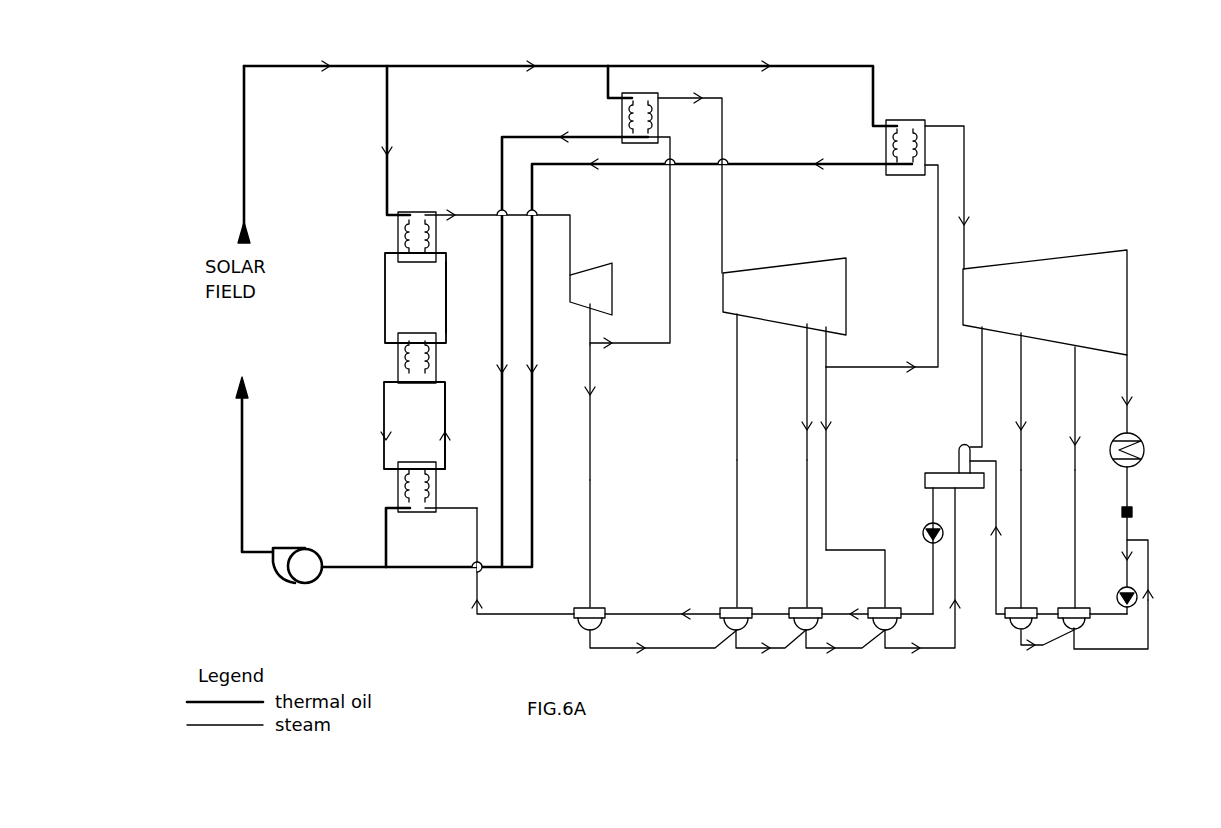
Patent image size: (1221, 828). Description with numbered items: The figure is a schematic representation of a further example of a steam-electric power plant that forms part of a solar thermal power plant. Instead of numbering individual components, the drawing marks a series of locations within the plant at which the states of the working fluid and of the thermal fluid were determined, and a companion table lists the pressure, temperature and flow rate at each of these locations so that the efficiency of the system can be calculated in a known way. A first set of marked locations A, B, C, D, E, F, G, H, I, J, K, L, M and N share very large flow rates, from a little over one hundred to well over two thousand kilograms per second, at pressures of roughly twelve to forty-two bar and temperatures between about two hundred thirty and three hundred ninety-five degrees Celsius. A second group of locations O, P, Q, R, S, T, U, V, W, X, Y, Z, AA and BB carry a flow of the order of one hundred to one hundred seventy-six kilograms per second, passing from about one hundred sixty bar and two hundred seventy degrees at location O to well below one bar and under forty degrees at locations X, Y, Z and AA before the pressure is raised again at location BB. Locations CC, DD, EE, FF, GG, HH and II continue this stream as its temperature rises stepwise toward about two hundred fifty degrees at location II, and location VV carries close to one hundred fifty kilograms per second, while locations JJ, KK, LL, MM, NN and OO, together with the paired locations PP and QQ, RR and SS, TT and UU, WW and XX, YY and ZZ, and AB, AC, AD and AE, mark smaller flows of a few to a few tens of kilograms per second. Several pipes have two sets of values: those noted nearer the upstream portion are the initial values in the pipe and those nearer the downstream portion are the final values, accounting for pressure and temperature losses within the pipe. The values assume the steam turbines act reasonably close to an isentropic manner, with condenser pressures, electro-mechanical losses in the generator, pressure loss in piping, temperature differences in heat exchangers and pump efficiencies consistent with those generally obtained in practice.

The location A is at (244, 143).
The location B is at (500, 66).
The location C is at (690, 66).
The location D is at (773, 163).
The location E is at (430, 570).
The location F is at (606, 80).
The location G is at (536, 137).
The location H is at (360, 570).
The location I is at (298, 583).
The location J is at (242, 485).
The location K is at (387, 140).
The location L is at (385, 283).
The location M is at (384, 424).
The location N is at (386, 542).
The location O is at (450, 508).
The location P is at (446, 425).
The location Q is at (446, 278).
The location R is at (450, 215).
The location S is at (590, 329).
The location T is at (625, 345).
The location U is at (723, 195).
The location V is at (873, 368).
The location W is at (964, 200).
The location X is at (1127, 393).
The location Y is at (1127, 486).
The location Z is at (1132, 535).
The location AA is at (1132, 547).
The location AB is at (1021, 372).
The location AC is at (1021, 575).
The location AD is at (1075, 390).
The location AE is at (1075, 575).
The location BB is at (1108, 592).
The location CC is at (1057, 590).
The location DD is at (996, 592).
The location EE is at (933, 507).
The location FF is at (912, 612).
The location GG is at (835, 613).
The location HH is at (758, 613).
The location II is at (647, 613).
The location JJ is at (665, 648).
The location KK is at (762, 650).
The location LL is at (825, 650).
The location MM is at (905, 650).
The location NN is at (1042, 652).
The location OO is at (1110, 650).
The location PP is at (590, 392).
The location QQ is at (590, 577).
The location RR is at (737, 341).
The location SS is at (737, 595).
The location TT is at (807, 346).
The location UU is at (805, 590).
The location VV is at (838, 342).
The location WW is at (826, 398).
The location XX is at (872, 548).
The location YY is at (982, 355).
The location ZZ is at (963, 446).